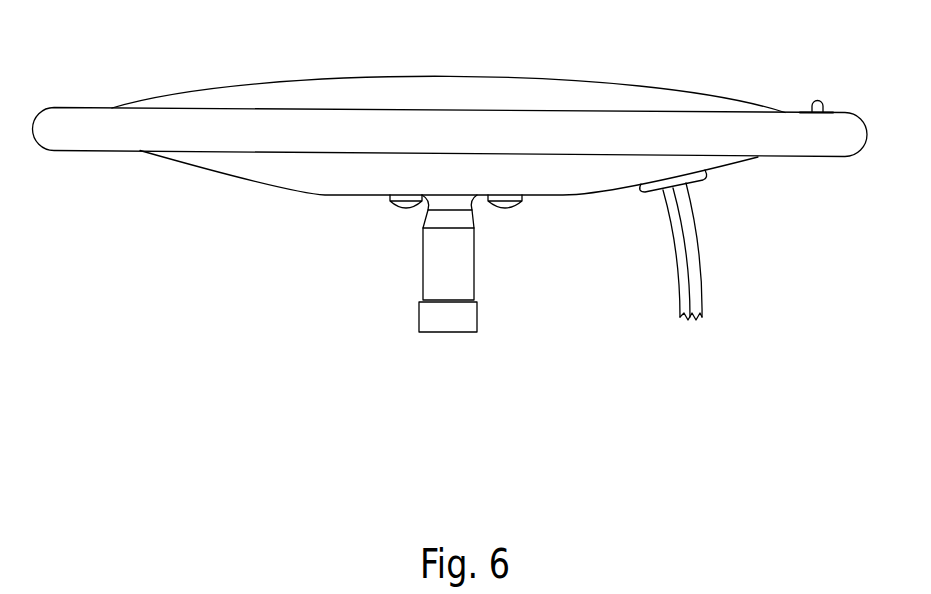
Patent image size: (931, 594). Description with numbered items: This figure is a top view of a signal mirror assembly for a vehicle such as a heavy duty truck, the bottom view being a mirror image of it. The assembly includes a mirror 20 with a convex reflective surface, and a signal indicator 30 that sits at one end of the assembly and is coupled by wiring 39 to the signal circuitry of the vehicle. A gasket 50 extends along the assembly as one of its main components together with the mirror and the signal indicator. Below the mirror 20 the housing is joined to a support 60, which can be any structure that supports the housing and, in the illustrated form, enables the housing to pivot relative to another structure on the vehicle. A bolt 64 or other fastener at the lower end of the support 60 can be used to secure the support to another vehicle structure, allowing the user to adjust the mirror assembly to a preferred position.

The mirror 20 is at (504, 77).
The signal indicator 30 is at (825, 102).
The wiring 39 is at (673, 257).
The gasket 50 is at (45, 118).
The support 60 is at (422, 265).
The bolt 64 is at (448, 333).